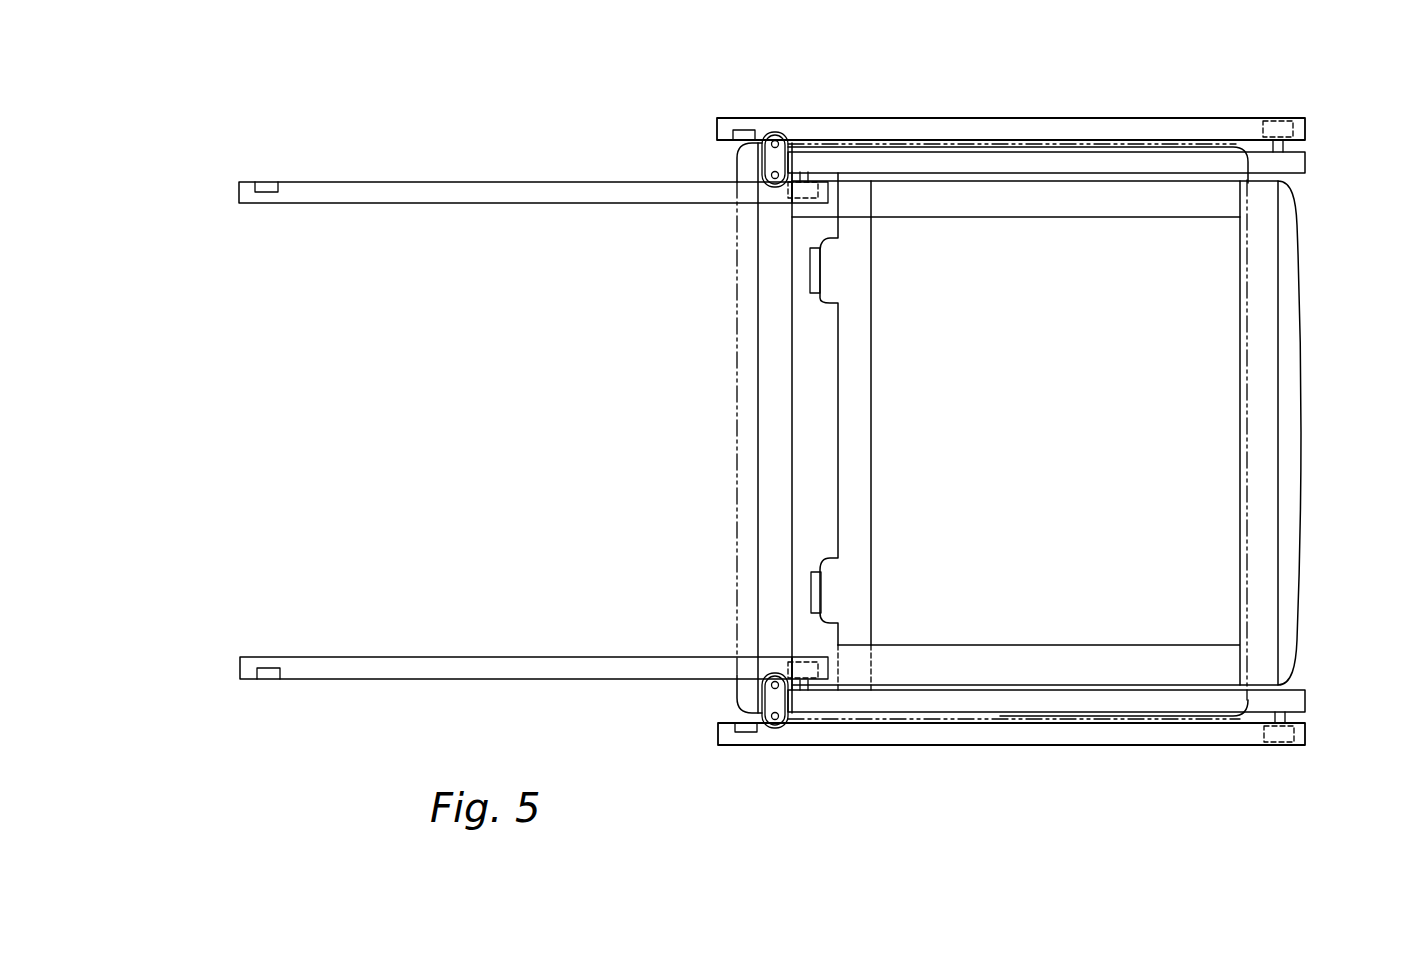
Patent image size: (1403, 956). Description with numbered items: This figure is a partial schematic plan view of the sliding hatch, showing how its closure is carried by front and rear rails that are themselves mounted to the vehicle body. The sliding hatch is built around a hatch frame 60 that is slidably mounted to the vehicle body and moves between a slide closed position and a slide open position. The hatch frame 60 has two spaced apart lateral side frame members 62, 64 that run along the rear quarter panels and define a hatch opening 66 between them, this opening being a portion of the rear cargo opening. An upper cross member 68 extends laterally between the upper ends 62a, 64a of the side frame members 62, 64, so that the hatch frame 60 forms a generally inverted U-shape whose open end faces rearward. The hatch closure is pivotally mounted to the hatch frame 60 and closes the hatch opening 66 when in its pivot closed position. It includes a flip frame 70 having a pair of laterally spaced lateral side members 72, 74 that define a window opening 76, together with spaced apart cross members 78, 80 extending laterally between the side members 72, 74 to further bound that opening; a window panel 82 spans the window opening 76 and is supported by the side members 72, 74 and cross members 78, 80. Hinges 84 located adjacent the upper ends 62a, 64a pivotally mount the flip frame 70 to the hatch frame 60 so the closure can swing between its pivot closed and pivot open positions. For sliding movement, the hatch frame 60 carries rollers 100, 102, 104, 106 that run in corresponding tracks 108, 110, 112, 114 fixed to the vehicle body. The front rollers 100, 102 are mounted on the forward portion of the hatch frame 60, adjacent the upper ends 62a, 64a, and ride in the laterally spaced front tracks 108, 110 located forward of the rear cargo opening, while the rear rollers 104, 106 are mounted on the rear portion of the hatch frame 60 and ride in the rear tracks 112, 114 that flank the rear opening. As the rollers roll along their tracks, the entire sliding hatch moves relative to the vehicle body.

The hatch frame 60 is at (1068, 706).
The lateral side frame member 62 is at (1008, 700).
The upper end of lateral side frame member 62a is at (820, 690).
The lateral side frame member 64 is at (1003, 160).
The upper end of lateral side frame member 64a is at (818, 163).
The hatch opening 66 is at (1112, 688).
The upper cross member 68 is at (850, 488).
The flip frame 70 is at (972, 670).
The lateral side member 72 is at (1187, 660).
The lateral side member 74 is at (1185, 205).
The window opening 76 is at (918, 645).
The cross member 78 is at (775, 430).
The cross member 80 is at (1258, 482).
The window panel 82 is at (738, 345).
The hinge 84 is at (778, 160).
The front roller 100 is at (806, 657).
The front roller 102 is at (805, 205).
The rear roller 104 is at (1278, 746).
The rear roller 106 is at (1275, 110).
The front track 108 is at (382, 680).
The front track 110 is at (383, 180).
The rear track 112 is at (1157, 733).
The rear track 114 is at (1157, 128).